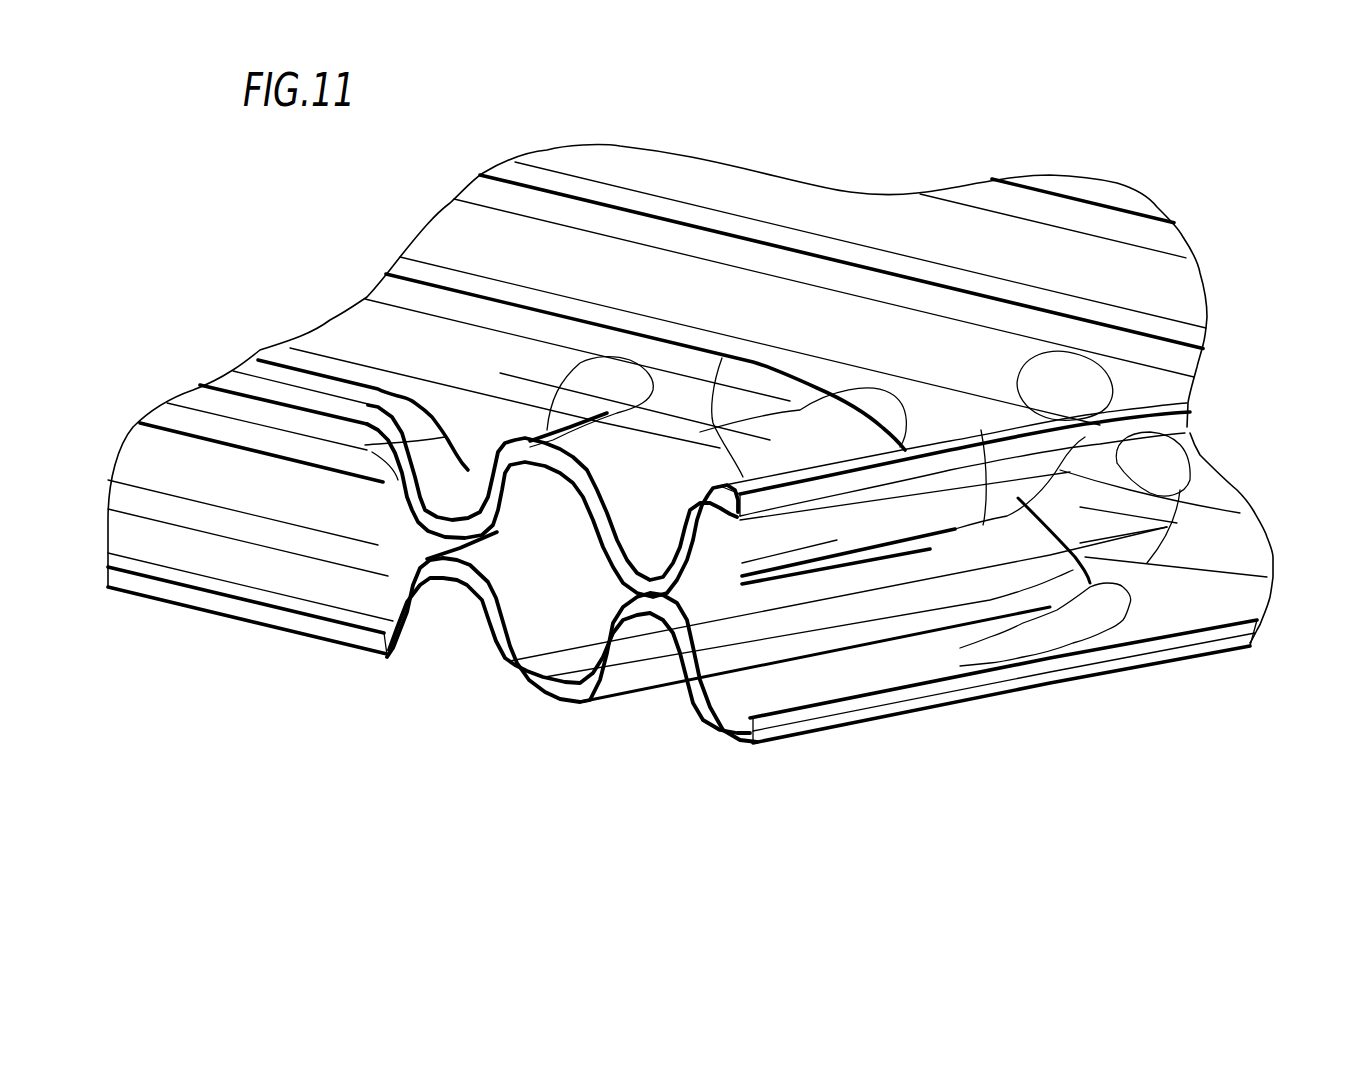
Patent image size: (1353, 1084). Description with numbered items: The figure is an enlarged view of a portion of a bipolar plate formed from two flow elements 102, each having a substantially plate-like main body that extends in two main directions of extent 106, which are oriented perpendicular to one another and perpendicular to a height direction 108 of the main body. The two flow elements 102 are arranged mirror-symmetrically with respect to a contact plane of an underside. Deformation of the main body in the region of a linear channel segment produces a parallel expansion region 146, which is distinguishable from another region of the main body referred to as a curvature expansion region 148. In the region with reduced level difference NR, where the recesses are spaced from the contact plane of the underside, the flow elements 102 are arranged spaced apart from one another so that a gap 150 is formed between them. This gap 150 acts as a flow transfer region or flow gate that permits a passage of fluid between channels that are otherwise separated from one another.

The flow element 102 is at (1167, 418).
The main directions of extent 106 is at (828, 840).
The height direction 108 is at (1082, 700).
The parallel expansion region 146 is at (819, 550).
The curvature expansion region 148 is at (1030, 553).
The gap 150 is at (864, 556).
The region with reduced level difference NR is at (930, 545).